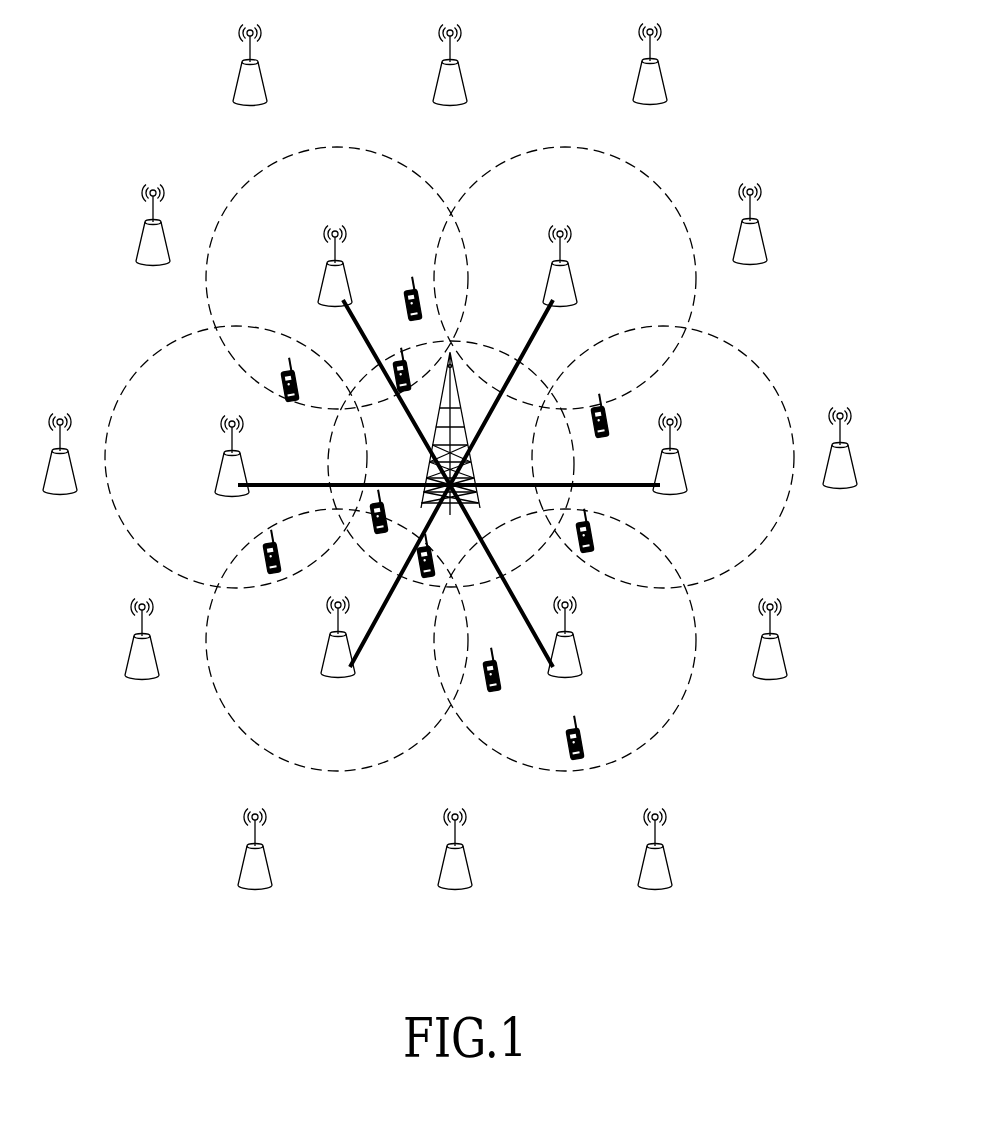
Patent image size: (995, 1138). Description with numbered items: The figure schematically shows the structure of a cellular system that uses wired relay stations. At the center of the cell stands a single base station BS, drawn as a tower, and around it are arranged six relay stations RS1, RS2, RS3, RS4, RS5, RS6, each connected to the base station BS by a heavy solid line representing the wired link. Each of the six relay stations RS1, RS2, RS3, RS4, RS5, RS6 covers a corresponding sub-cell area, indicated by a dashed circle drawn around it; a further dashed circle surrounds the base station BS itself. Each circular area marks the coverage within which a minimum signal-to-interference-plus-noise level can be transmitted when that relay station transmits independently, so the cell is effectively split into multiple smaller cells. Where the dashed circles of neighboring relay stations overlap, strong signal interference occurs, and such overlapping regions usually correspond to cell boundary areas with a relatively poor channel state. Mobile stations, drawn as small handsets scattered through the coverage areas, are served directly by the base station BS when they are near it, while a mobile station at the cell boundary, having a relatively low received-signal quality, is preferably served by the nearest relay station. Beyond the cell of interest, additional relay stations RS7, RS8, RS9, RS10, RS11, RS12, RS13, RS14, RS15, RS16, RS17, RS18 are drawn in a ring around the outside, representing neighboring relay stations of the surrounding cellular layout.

The base station BS is at (385, 512).
The relay station RS1 is at (670, 467).
The relay station RS2 is at (560, 279).
The relay station RS3 is at (334, 279).
The relay station RS4 is at (232, 469).
The relay station RS5 is at (338, 650).
The relay station RS6 is at (565, 650).
The relay station 7 RS7 is at (840, 461).
The relay station 8 RS8 is at (750, 237).
The relay station 9 RS9 is at (650, 77).
The relay station 10 RS10 is at (452, 78).
The relay station 11 RS11 is at (252, 78).
The relay station 12 RS12 is at (155, 238).
The relay station 13 RS13 is at (62, 467).
The relay station 14 RS14 is at (144, 652).
The relay station 15 RS15 is at (257, 862).
The relay station 16 RS16 is at (457, 862).
The relay station 17 RS17 is at (657, 862).
The relay station 18 RS18 is at (772, 652).